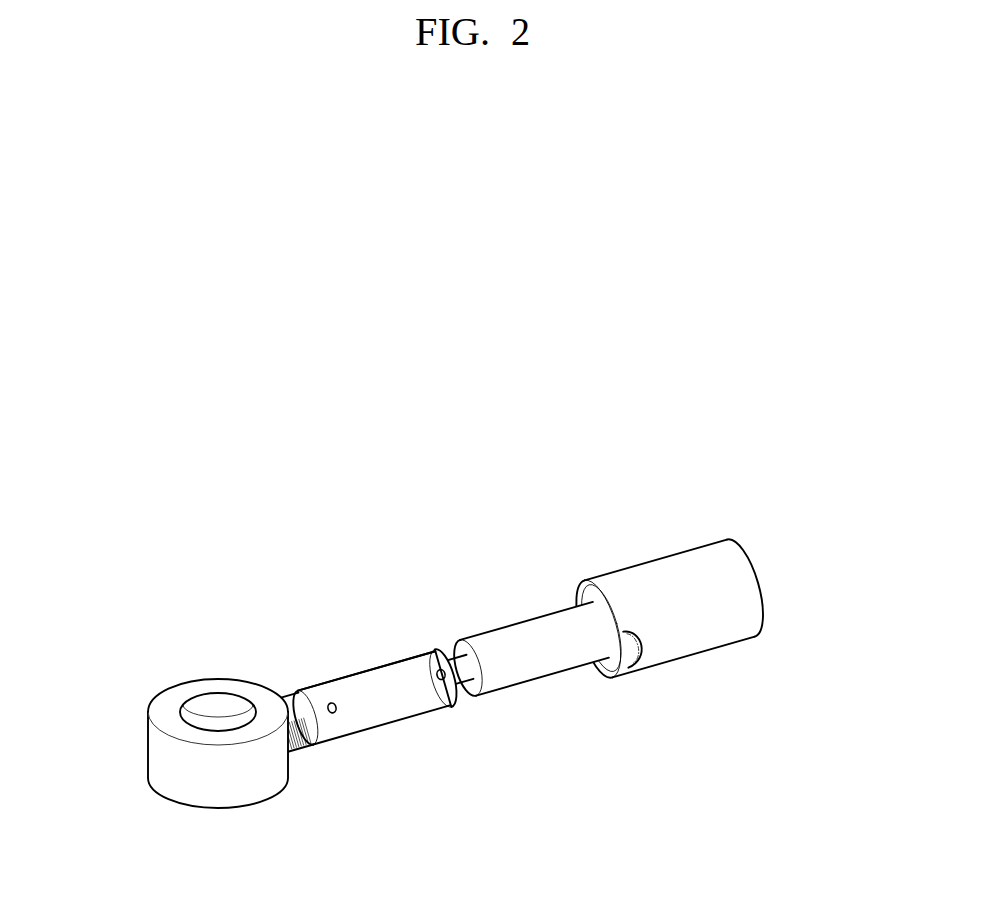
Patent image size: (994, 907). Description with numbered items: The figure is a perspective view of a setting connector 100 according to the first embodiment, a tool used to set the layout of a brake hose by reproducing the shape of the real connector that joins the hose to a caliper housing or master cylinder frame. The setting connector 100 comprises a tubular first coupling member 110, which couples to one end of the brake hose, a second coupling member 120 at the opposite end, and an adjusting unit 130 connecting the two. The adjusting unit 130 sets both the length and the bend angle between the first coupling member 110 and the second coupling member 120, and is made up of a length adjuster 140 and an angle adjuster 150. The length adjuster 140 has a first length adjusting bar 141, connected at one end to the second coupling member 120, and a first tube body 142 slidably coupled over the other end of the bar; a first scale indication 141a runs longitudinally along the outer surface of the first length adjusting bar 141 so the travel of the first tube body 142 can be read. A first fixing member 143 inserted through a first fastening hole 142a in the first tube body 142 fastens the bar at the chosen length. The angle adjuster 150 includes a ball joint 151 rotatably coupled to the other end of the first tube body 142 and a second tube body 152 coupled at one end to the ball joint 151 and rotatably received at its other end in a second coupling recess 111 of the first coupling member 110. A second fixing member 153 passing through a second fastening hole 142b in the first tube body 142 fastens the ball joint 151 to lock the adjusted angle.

The setting connector 100 is at (723, 452).
The first coupling member 110 is at (726, 627).
The second coupling recess 111 is at (635, 673).
The second coupling member 120 is at (157, 760).
The adjusting unit 130 is at (573, 828).
The length adjuster 140 is at (369, 727).
The first length adjusting bar 141 is at (293, 748).
The first scale indication 141a is at (290, 698).
The first tube body 142 is at (348, 727).
The first fastening hole 142a is at (322, 700).
The second fastening hole 142b is at (443, 655).
The first fixing member 143 is at (347, 703).
The angle adjuster 150 is at (548, 715).
The ball joint 151 is at (467, 693).
The second tube body 152 is at (537, 670).
The second fixing member 153 is at (445, 688).